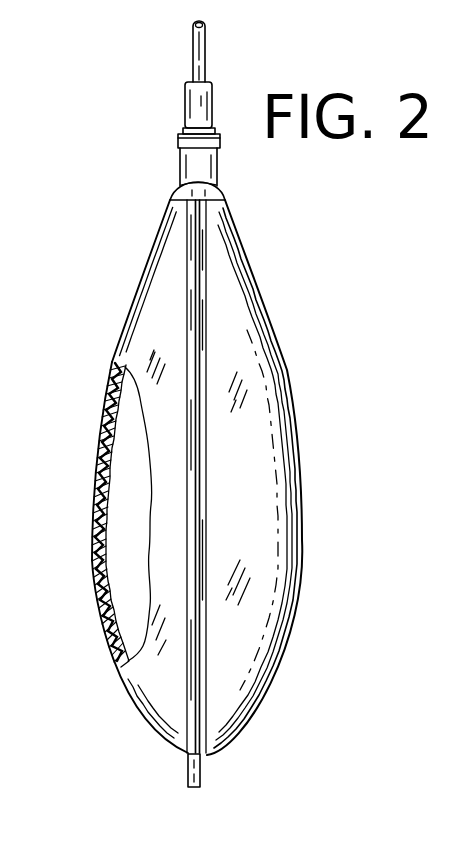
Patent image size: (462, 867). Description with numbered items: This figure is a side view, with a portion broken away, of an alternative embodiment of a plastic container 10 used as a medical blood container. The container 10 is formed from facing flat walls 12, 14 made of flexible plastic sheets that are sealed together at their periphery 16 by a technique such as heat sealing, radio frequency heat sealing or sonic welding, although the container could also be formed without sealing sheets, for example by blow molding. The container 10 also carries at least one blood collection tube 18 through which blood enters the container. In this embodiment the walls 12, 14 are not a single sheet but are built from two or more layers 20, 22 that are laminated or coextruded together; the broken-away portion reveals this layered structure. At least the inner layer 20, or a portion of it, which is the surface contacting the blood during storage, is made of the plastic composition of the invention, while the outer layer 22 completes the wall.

The plastic container 10 is at (313, 300).
The flat wall 12 is at (158, 285).
The flat wall 14 is at (255, 393).
The periphery 16 is at (195, 788).
The blood collection tube 18 is at (193, 43).
The inner layer 20 is at (108, 557).
The outer layer 22 is at (96, 578).